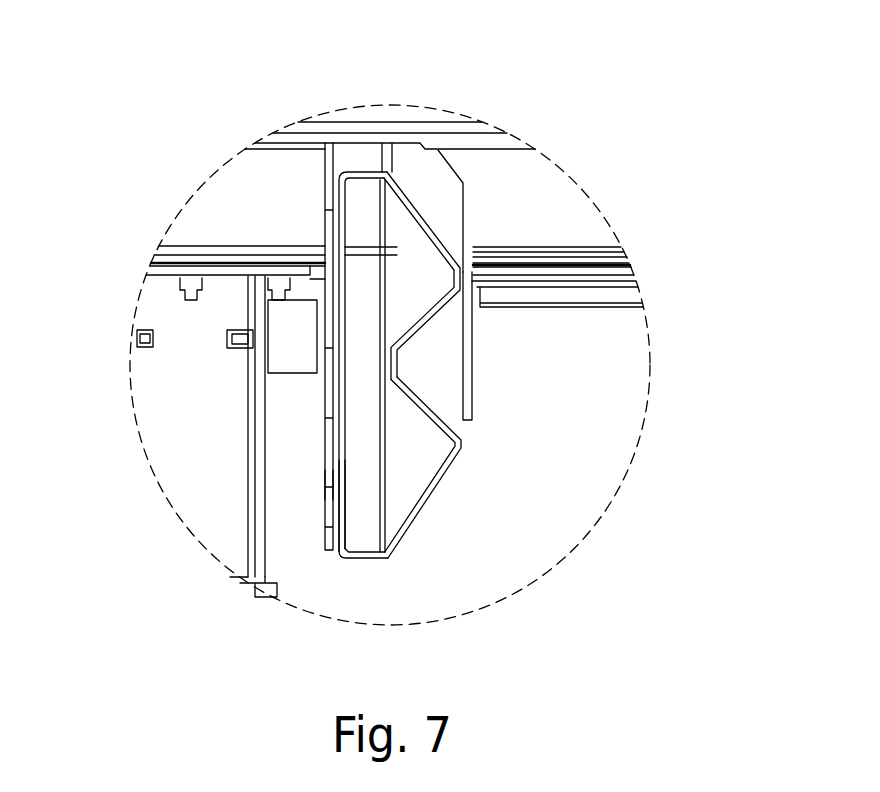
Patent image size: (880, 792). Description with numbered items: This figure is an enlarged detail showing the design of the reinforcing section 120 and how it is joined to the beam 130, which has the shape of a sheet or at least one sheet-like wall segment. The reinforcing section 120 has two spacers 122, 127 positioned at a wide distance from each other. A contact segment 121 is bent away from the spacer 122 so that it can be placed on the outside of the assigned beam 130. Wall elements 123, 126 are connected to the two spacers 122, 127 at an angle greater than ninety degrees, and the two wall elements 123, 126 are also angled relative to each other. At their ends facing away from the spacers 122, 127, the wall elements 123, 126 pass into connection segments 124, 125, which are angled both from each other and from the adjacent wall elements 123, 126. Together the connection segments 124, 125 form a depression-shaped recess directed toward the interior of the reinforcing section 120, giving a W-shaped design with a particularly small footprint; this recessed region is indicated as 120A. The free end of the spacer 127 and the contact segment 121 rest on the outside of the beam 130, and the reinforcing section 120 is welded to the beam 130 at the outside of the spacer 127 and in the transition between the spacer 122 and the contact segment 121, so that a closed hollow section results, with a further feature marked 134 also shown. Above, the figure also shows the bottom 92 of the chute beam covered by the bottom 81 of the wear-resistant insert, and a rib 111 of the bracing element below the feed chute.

The bottom 81 is at (403, 130).
The bottom 92 is at (447, 146).
The spacer 127 is at (353, 160).
The wall element 126 is at (433, 230).
The rib 111 is at (573, 207).
The connection segment 125 is at (450, 318).
The connection segment 124 is at (478, 415).
The duct section 120A is at (487, 432).
The beam 130 is at (325, 388).
The fastener 134 is at (330, 468).
The contact segment 121 is at (335, 520).
The reinforcing section 120 is at (348, 576).
The spacer 122 is at (370, 560).
The wall element 123 is at (440, 495).